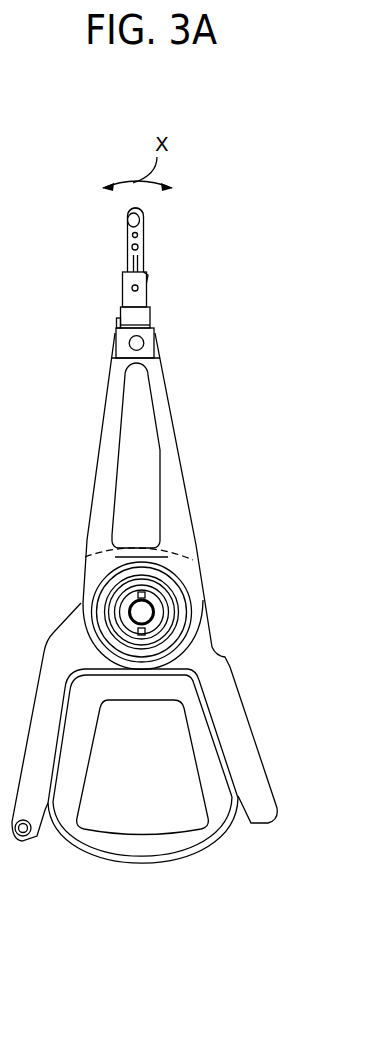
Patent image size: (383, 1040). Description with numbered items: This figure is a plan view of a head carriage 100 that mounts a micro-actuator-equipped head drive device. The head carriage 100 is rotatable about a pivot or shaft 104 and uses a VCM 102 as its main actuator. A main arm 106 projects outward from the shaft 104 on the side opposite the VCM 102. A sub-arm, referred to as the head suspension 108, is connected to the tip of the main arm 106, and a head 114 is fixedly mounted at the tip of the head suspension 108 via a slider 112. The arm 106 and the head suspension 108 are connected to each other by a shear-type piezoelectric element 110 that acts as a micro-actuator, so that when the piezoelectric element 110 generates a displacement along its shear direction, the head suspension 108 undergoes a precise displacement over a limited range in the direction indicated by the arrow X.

The head carriage 100 is at (198, 498).
The VCM 102 is at (175, 829).
The shaft 104 is at (144, 611).
The main arm 106 is at (175, 452).
The head suspension 108 is at (153, 250).
The shear-type piezoelectric element 110 is at (116, 310).
The slider 112 is at (140, 211).
The head 114 is at (127, 206).